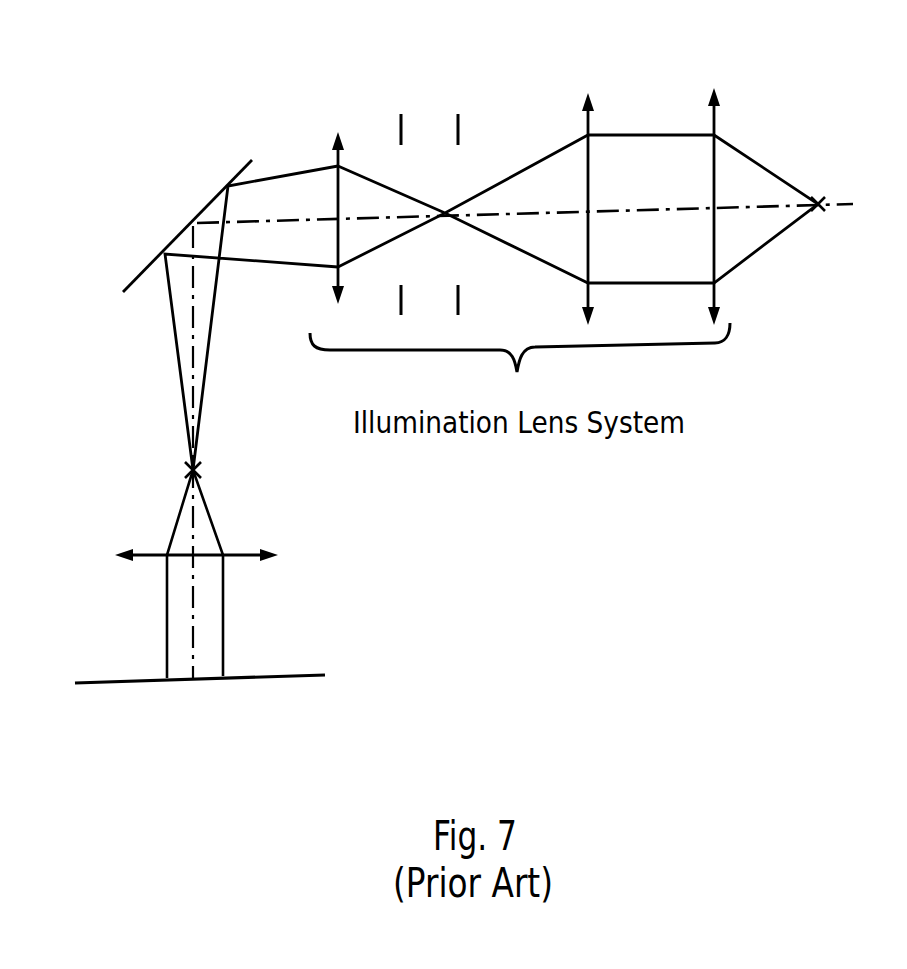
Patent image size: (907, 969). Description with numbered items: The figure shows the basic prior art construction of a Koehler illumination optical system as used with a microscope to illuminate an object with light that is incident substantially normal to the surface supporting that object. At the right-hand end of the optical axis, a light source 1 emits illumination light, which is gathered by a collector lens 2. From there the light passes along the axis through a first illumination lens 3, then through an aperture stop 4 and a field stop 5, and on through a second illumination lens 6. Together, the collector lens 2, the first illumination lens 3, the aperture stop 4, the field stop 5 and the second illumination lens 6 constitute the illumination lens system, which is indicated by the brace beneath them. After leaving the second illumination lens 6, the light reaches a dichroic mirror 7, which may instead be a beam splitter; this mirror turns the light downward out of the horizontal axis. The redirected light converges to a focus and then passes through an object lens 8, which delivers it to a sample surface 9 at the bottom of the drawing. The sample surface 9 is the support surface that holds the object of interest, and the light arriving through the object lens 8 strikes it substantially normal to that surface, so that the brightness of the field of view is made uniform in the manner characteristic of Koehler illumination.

The light source 1 is at (818, 195).
The collector lens 2 is at (715, 175).
The first illumination lens 3 is at (590, 165).
The aperture stop 4 is at (458, 127).
The field stop 5 is at (400, 128).
The second illumination lens 6 is at (334, 188).
The dichroic mirror 7 is at (163, 252).
The object lens 8 is at (158, 553).
The sample surface 9 is at (275, 675).